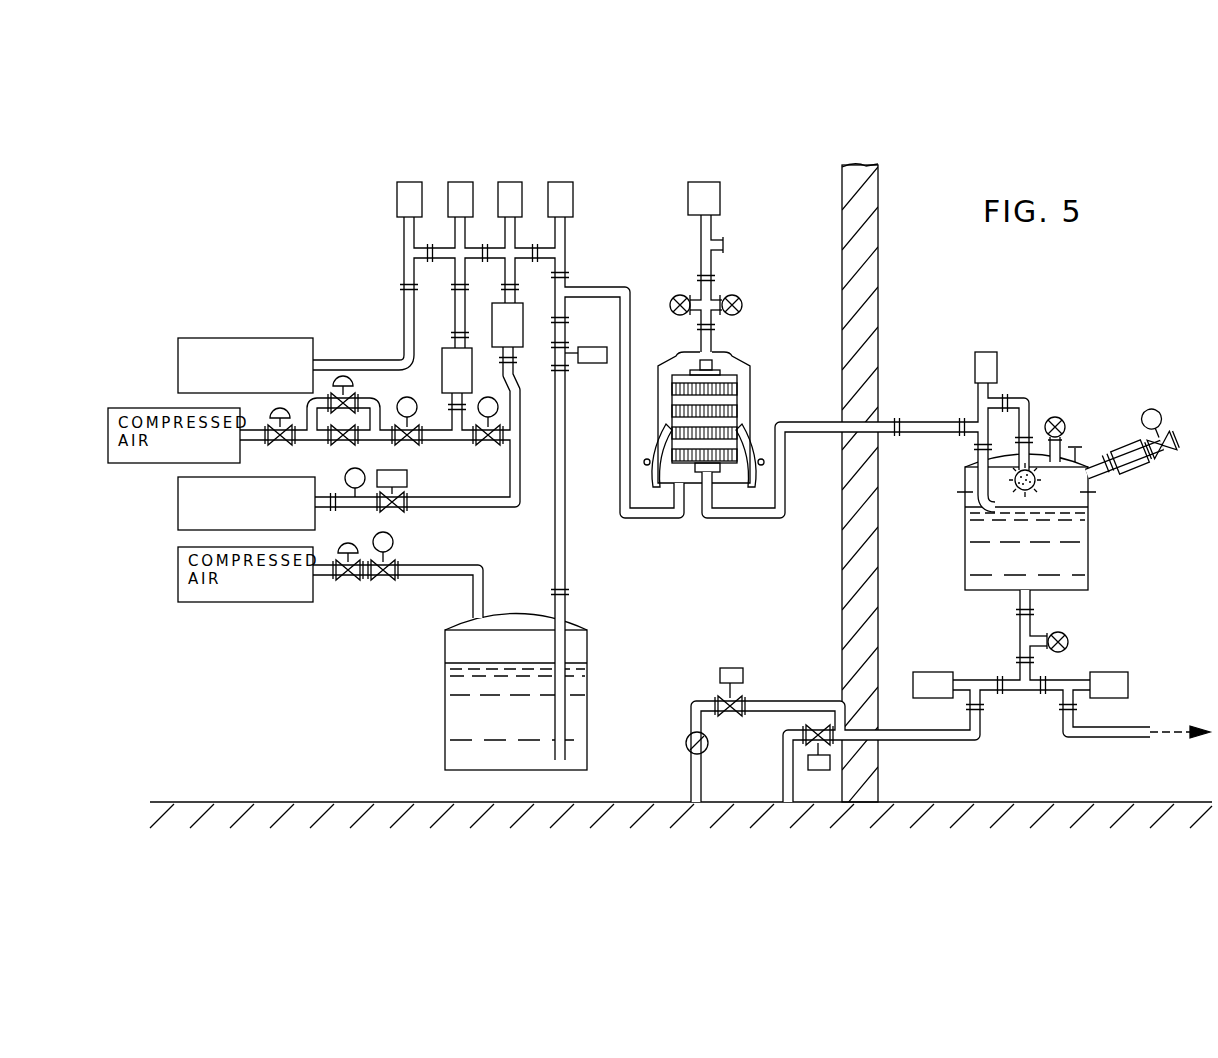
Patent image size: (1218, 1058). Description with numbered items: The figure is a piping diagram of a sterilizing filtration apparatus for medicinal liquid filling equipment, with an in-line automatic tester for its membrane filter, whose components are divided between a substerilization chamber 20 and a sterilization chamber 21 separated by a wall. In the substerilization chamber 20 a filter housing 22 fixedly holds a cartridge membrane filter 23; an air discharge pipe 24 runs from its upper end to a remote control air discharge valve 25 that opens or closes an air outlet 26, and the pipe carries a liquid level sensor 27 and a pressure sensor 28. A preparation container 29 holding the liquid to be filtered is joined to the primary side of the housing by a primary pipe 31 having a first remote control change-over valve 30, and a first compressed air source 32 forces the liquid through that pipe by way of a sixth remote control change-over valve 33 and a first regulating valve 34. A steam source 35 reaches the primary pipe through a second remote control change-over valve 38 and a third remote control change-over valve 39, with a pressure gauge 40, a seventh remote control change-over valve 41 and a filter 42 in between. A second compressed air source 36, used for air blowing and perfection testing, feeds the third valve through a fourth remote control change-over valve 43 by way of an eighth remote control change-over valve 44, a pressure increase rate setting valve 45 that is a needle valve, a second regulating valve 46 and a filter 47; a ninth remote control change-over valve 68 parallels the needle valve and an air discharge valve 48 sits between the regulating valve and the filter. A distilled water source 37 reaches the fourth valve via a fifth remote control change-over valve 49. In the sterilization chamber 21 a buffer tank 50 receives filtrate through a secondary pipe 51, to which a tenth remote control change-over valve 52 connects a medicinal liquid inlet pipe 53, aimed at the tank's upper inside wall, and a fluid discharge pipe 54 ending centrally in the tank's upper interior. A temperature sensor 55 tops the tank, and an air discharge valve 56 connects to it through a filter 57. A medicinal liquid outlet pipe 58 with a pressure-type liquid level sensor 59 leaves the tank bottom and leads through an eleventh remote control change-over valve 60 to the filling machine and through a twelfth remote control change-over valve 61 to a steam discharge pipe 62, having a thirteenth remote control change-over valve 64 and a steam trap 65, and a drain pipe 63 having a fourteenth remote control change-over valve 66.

The substerilization chamber 20 is at (712, 606).
The sterilization chamber 21 is at (1183, 592).
The filter housing 22 is at (752, 405).
The cartridge membrane filter 23 is at (730, 385).
The air discharge pipe 24 is at (698, 288).
The remote control air discharge valve 25 is at (698, 226).
The air outlet 26 is at (724, 245).
The liquid level sensor 27 is at (742, 305).
The pressure sensor 28 is at (672, 298).
The preparation container 29 is at (445, 726).
The first remote control change-over valve 30 is at (578, 363).
The primary pipe 31 is at (565, 450).
The first compressed air source 32 is at (178, 575).
The sixth remote control change-over valve 33 is at (350, 582).
The first regulating valve 34 is at (385, 578).
The steam source 35 is at (178, 508).
The second compressed air source 36 is at (128, 408).
The distilled water source 37 is at (178, 366).
The second remote control change-over valve 38 is at (565, 255).
The third remote control change-over valve 39 is at (514, 232).
The pressure gauge 40 is at (355, 490).
The seventh remote control change-over valve 41 is at (400, 510).
The filter 42 is at (523, 330).
The fourth remote control change-over valve 43 is at (453, 232).
The eighth remote control change-over valve 44 is at (285, 442).
The pressure increase rate setting valve 45 is at (340, 443).
The second regulating valve 46 is at (405, 443).
The filter 47 is at (442, 380).
The air discharge valve 48 is at (488, 443).
The fifth remote control change-over valve 49 is at (404, 252).
The buffer tank 50 is at (1090, 558).
The secondary pipe 51 is at (918, 430).
The tenth remote control change-over valve 52 is at (978, 393).
The medicinal liquid inlet pipe 53 is at (983, 476).
The fluid discharge pipe 54 is at (1027, 465).
The temperature sensor 55 is at (1058, 415).
The air discharge valve 56 is at (1165, 455).
The filter 57 is at (1125, 445).
The medicinal liquid outlet pipe 58 is at (1018, 622).
The liquid level sensor 59 is at (1069, 642).
The eleventh remote control change-over valve 60 is at (1073, 679).
The twelfth remote control change-over valve 61 is at (977, 678).
The steam discharge pipe 62 is at (697, 700).
The drain pipe 63 is at (782, 782).
The thirteenth remote control change-over valve 64 is at (733, 715).
The steam trap 65 is at (686, 743).
The fourteenth remote control change-over valve 66 is at (818, 722).
The ninth remote control change-over valve 68 is at (352, 399).